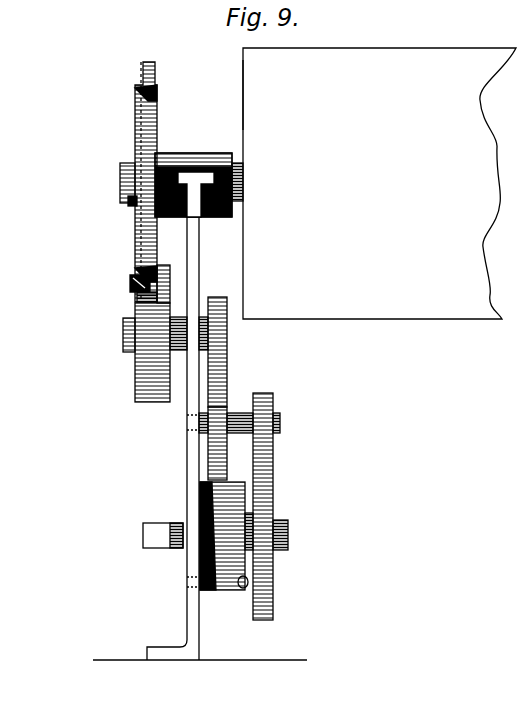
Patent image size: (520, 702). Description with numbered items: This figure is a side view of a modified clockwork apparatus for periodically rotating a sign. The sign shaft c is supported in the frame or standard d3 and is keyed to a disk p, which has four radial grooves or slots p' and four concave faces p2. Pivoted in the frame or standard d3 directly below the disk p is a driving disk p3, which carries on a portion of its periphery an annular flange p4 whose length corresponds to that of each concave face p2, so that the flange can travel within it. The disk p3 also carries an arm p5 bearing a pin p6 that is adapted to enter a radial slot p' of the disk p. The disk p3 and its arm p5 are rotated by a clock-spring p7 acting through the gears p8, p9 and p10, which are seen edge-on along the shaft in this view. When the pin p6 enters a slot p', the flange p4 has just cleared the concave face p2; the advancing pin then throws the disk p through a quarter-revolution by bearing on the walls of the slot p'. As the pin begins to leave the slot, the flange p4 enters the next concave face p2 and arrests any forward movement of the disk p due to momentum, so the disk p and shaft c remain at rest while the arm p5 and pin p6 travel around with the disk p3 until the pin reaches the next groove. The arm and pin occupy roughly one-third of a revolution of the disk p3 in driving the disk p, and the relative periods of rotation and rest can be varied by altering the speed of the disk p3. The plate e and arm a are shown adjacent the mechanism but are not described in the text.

The plate e is at (379, 184).
The arm a is at (243, 96).
The disk p is at (160, 182).
The radial grooves or slots p' is at (135, 178).
The shaft c is at (120, 186).
The concave faces p2 is at (150, 153).
The arm p5 is at (168, 272).
The pin p6 is at (130, 284).
The annular flange p4 is at (137, 300).
The disk p3 is at (156, 400).
The gear p10 is at (228, 353).
The gear p9 is at (226, 440).
The gear p8 is at (273, 482).
The clock-spring p7 is at (232, 590).
The frame or standard d3 is at (185, 622).